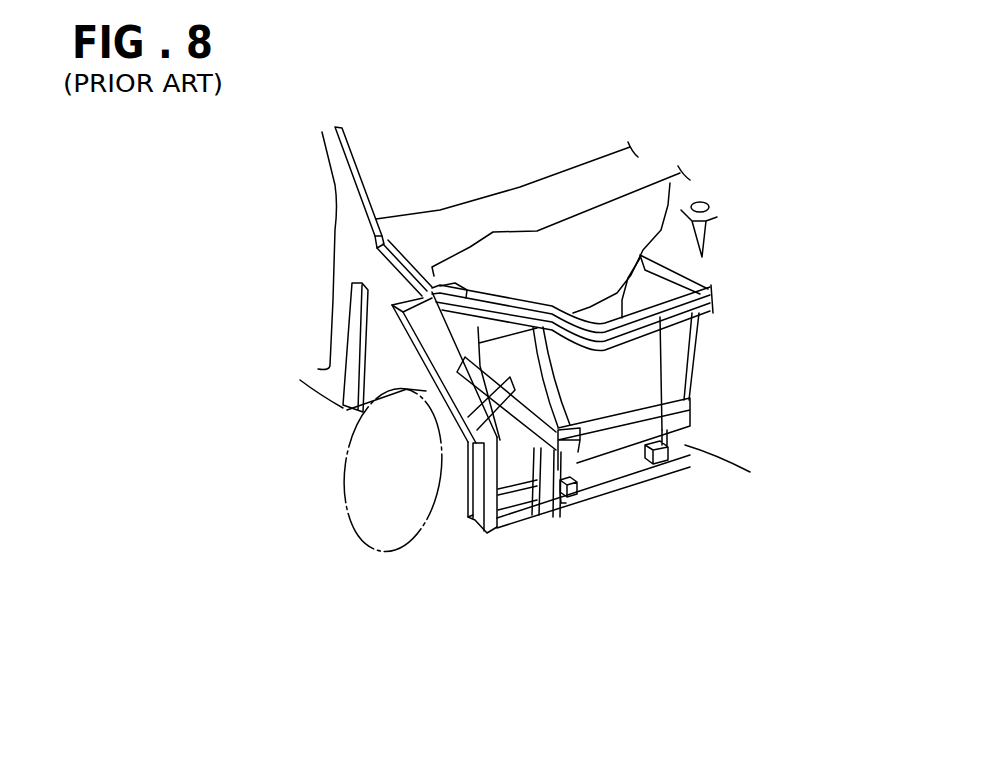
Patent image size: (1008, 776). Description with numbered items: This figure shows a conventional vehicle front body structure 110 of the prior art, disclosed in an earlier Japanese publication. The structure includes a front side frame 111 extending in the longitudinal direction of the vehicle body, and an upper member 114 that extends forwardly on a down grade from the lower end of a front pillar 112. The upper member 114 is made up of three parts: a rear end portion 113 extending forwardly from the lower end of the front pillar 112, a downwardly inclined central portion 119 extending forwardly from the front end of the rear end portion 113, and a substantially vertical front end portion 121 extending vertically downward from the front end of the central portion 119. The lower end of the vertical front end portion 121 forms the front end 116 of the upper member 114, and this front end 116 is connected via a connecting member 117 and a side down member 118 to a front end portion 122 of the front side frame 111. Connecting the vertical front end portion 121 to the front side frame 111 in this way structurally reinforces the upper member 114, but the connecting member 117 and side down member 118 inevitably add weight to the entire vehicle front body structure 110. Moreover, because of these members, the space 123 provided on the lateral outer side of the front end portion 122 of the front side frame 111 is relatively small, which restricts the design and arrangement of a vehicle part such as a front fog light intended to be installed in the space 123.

The vehicle front body structure 110 is at (479, 151).
The front side frame 111 is at (527, 397).
The front pillar 112 is at (338, 177).
The rear end portion 113 is at (392, 288).
The upper member 114 is at (258, 477).
The front end 116 is at (475, 523).
The connecting member 117 is at (530, 513).
The side down member 118 is at (573, 498).
The central portion 119 is at (452, 383).
The vertical front end portion 121 is at (478, 487).
The front end portion 122 is at (673, 440).
The space 123 is at (522, 561).